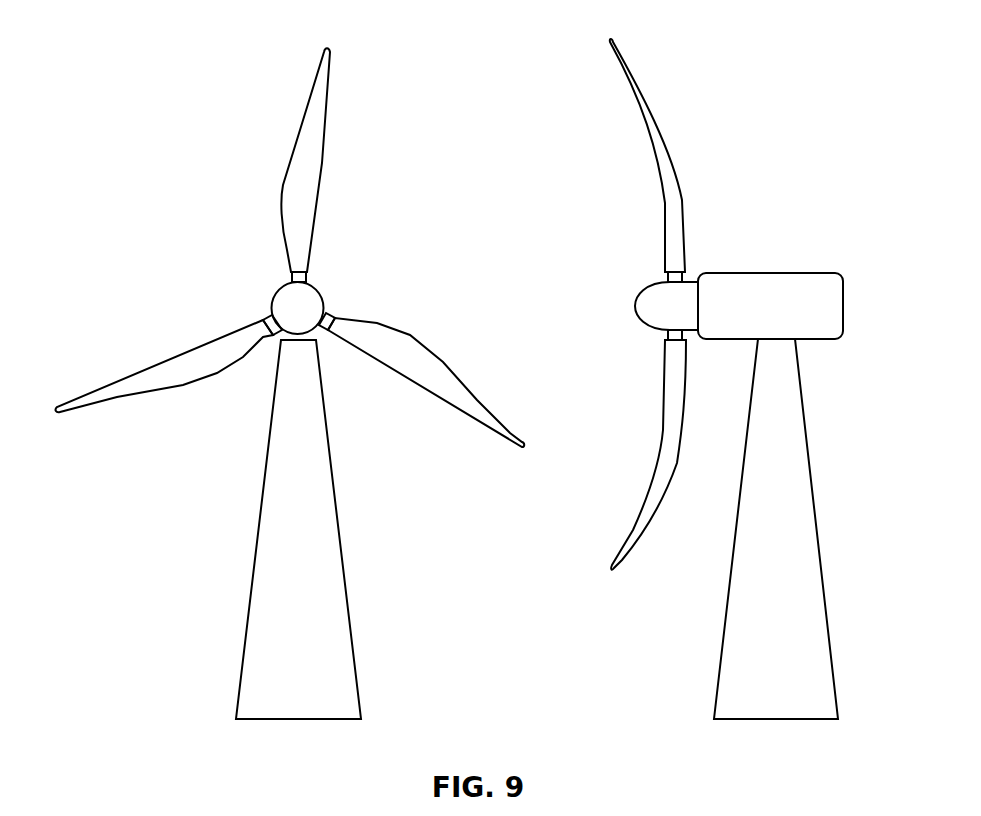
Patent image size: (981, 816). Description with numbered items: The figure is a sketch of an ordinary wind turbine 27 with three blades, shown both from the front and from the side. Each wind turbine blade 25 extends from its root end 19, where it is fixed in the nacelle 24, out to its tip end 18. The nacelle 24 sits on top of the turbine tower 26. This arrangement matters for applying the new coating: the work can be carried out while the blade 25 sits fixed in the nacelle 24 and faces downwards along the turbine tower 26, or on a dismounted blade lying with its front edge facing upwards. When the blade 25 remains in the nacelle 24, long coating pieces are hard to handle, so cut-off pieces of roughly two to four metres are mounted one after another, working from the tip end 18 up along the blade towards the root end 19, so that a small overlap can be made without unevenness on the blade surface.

The tip end 18 is at (518, 450).
The root end 19 is at (340, 317).
The nacelle 24 is at (830, 313).
The wind turbine blade 25 is at (297, 172).
The turbine tower 26 is at (337, 603).
The wind turbine 27 is at (414, 129).